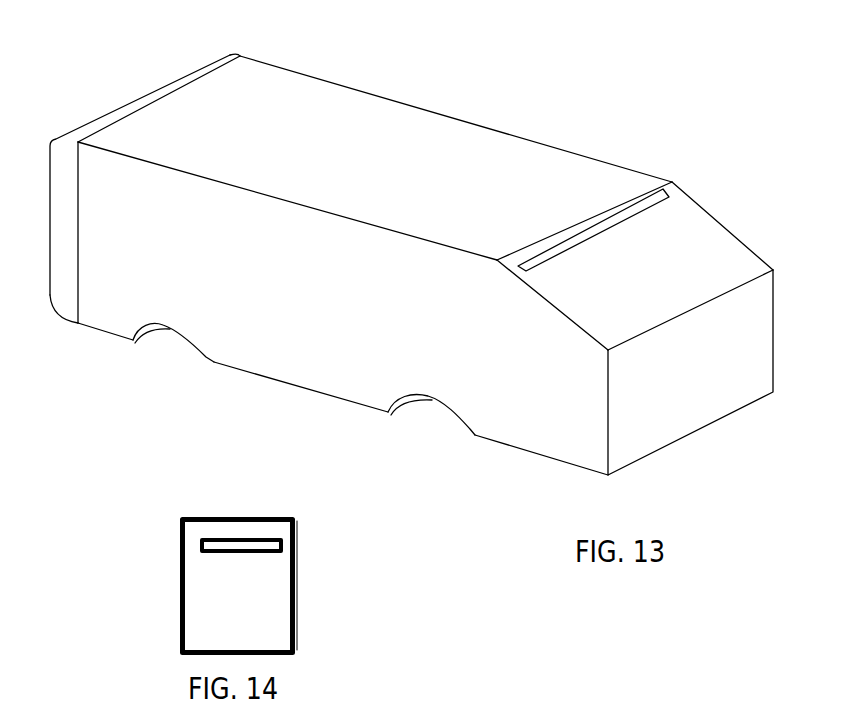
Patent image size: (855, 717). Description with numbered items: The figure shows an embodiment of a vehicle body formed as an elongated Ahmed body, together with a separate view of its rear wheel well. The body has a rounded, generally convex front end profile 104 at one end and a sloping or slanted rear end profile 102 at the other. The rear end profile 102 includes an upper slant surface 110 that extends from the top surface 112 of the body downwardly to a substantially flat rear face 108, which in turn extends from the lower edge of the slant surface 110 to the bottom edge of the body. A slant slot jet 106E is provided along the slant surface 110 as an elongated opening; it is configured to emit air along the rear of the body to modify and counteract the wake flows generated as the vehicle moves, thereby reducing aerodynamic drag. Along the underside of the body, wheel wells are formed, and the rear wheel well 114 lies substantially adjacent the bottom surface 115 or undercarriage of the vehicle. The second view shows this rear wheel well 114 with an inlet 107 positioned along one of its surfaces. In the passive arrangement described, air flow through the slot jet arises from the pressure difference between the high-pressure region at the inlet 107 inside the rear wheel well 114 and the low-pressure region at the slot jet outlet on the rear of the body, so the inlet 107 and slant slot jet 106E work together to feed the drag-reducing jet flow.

In FIG. 13, the rear end profile 102 is at (476, 433).
In FIG. 13, the front end profile 104 is at (48, 212).
In FIG. 13, the slant slot jet 106E is at (652, 193).
In FIG. 14, the inlet 107 is at (296, 541).
In FIG. 13, the rear face 108 is at (694, 417).
In FIG. 13, the slant surface 110 is at (728, 248).
In FIG. 13, the top surface 112 is at (393, 112).
In FIG. 13, the rear wheel well 114 is at (181, 344).
In FIG. 14, the rear wheel well 114 is at (199, 597).
In FIG. 13, the bottom surface 115 is at (300, 390).